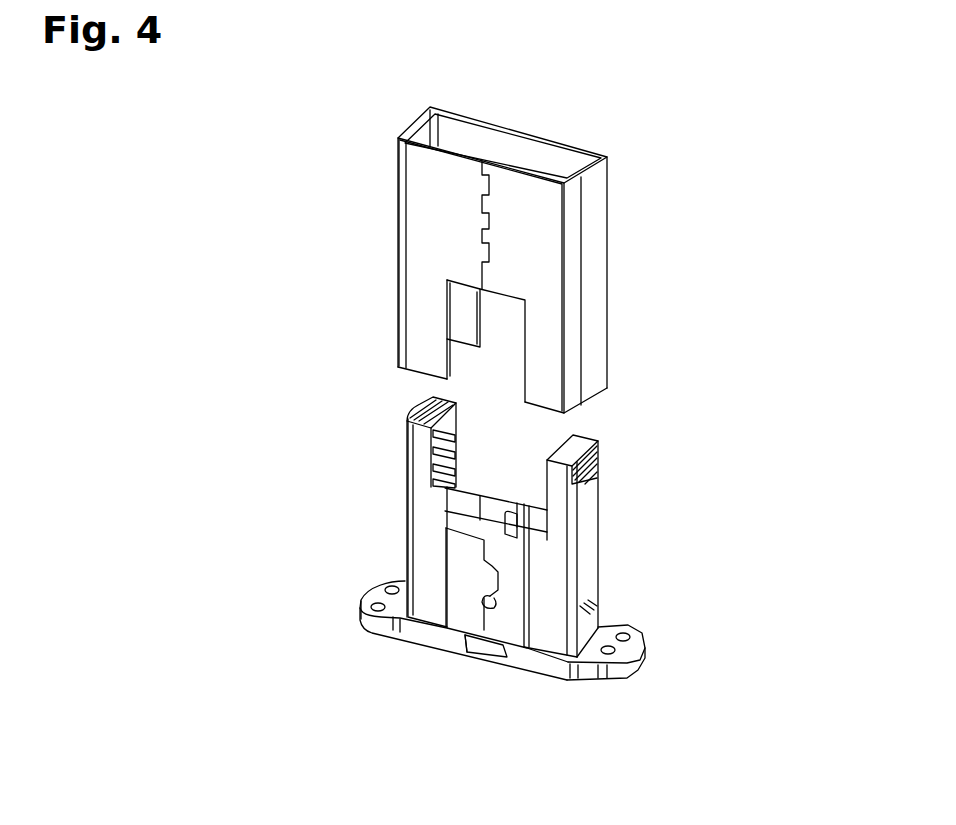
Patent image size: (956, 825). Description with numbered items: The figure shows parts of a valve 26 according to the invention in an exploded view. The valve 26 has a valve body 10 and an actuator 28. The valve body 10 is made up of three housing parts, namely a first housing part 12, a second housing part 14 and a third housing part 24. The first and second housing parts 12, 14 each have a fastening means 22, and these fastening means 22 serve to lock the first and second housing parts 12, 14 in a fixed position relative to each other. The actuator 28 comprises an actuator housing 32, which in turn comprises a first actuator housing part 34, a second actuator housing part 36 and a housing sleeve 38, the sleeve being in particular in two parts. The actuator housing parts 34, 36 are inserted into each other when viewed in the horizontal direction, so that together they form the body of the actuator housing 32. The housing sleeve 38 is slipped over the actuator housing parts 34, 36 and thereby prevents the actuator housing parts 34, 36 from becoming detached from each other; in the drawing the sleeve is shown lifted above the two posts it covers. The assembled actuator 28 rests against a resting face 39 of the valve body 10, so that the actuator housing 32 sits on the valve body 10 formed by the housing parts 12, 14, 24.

The valve body 10 is at (662, 605).
The first housing part 12 is at (428, 640).
The second housing part 14 is at (552, 668).
The fastening means 22 is at (647, 647).
The third housing part 24 is at (478, 648).
The valve 26 is at (713, 199).
The actuator 28 is at (292, 308).
The actuator housing 32 is at (727, 411).
The first actuator housing part 34 is at (417, 483).
The second actuator housing part 36 is at (577, 512).
The housing sleeve 38 is at (603, 337).
The resting face 39 is at (423, 582).